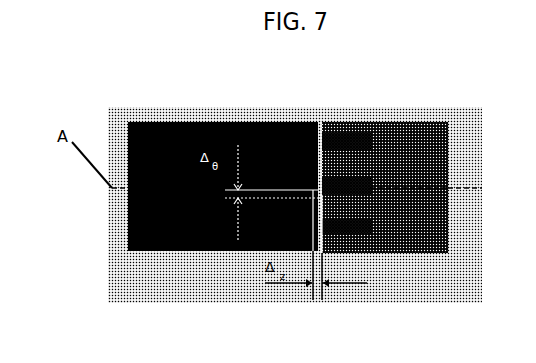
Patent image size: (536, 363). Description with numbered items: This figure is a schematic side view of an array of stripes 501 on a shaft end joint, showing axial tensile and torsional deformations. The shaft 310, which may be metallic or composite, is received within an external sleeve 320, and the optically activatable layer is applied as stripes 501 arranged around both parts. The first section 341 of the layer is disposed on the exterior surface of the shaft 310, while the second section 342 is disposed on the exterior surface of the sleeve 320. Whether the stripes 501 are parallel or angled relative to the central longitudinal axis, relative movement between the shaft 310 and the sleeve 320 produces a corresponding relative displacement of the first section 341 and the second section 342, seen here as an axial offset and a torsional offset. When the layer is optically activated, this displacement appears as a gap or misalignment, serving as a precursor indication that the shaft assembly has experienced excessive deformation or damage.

The shaft 310 is at (162, 251).
The external sleeve 320 is at (413, 237).
The first section 341 is at (270, 130).
The second section 342 is at (333, 142).
The stripes 501 is at (357, 232).